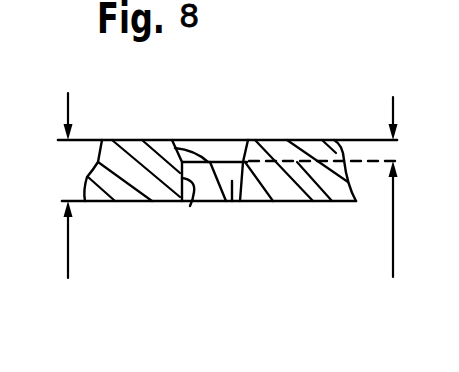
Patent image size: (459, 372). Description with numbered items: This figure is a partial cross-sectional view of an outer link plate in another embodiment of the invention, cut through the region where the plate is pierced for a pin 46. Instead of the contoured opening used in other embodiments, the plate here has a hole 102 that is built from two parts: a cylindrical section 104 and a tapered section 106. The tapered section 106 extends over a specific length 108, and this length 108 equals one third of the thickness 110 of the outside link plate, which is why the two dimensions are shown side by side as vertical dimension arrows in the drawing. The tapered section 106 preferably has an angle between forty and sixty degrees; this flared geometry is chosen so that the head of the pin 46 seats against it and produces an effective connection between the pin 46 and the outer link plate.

The pin 46 is at (308, 189).
The hole 102 is at (226, 201).
The cylindrical section 104 is at (190, 206).
The tapered section 106 is at (232, 201).
The length 108 is at (396, 208).
The thickness 110 is at (62, 208).